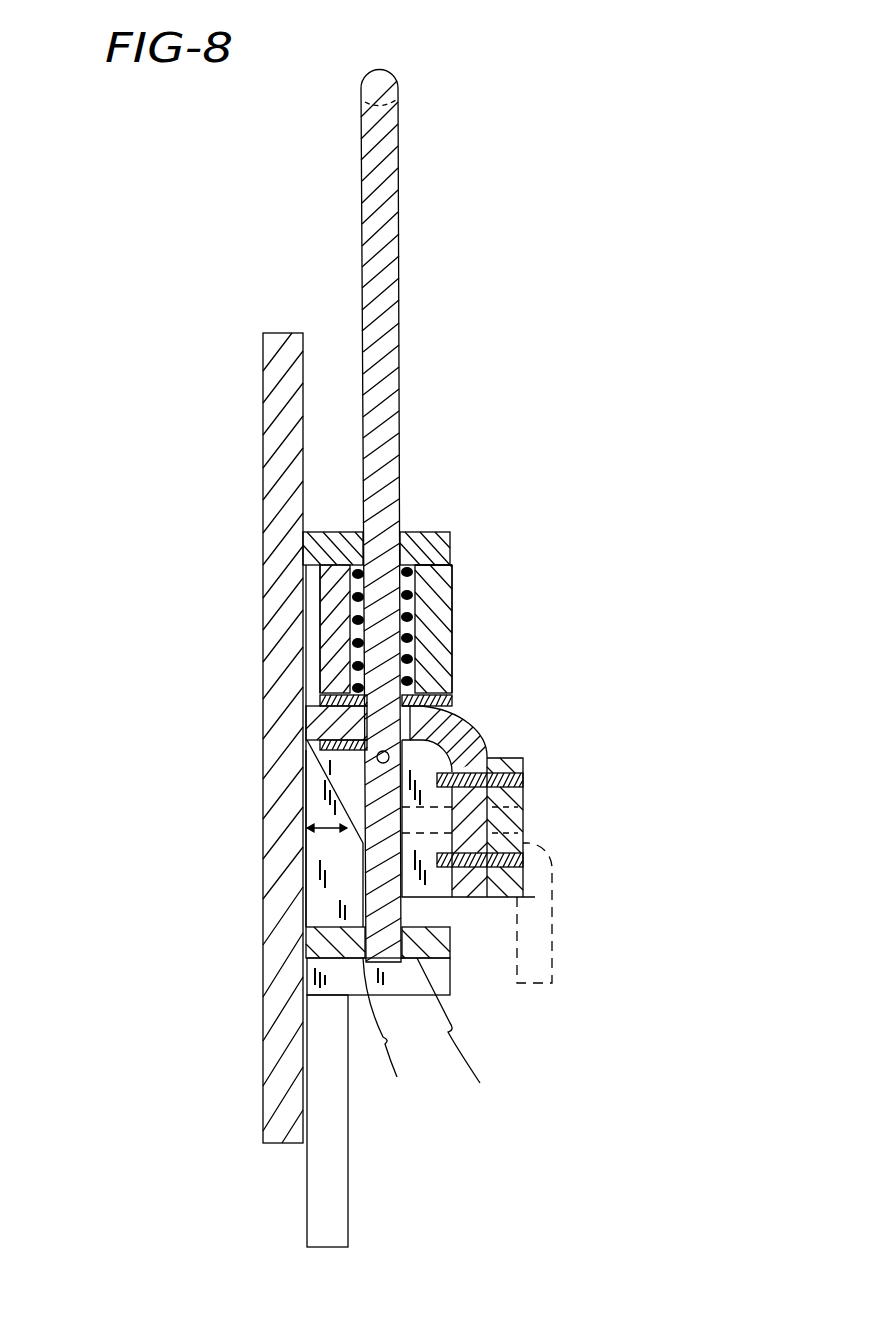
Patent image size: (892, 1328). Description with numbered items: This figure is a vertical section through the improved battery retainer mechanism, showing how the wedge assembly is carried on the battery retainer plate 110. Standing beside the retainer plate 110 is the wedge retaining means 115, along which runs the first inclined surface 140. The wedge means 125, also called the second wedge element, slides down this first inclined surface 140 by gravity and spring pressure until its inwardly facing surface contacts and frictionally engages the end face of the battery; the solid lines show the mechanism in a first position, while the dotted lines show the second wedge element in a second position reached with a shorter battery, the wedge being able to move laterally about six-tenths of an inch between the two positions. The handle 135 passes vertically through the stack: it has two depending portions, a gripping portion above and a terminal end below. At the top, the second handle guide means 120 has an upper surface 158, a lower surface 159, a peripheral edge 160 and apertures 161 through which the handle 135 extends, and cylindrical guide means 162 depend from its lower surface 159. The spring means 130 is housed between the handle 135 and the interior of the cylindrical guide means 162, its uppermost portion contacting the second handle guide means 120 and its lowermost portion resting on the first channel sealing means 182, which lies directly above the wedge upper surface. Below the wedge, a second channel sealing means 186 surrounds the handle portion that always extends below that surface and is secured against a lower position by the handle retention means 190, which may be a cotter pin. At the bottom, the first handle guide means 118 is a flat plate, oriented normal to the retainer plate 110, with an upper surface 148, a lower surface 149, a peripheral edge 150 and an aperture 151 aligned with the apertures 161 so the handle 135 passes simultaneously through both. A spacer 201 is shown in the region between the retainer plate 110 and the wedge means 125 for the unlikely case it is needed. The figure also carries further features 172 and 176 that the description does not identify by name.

The battery retainer plate 110 is at (221, 738).
The wedge retaining means 115 is at (318, 912).
The first handle guide means 118 is at (455, 960).
The second handle guide means 120 is at (428, 534).
The wedge means 125 is at (475, 725).
The spring means 130 is at (453, 583).
The handle 135 is at (399, 178).
The first inclined surface 140 is at (327, 788).
The upper surface 148 is at (437, 922).
The lower surface 149 is at (465, 1034).
The peripheral edge 150 is at (455, 950).
The aperture 151 is at (391, 1034).
The upper surface 158 is at (329, 533).
The lower surface 159 is at (297, 596).
The peripheral edge 160 is at (453, 548).
The apertures 161 is at (425, 508).
The cylindrical guide means 162 is at (455, 622).
The lower clamp bar 172 is at (432, 843).
The clamp 176 is at (482, 743).
The first channel sealing means 182 is at (457, 702).
The second channel sealing means 186 is at (307, 743).
The handle retention means 190 is at (377, 759).
The spacer 201 is at (525, 783).